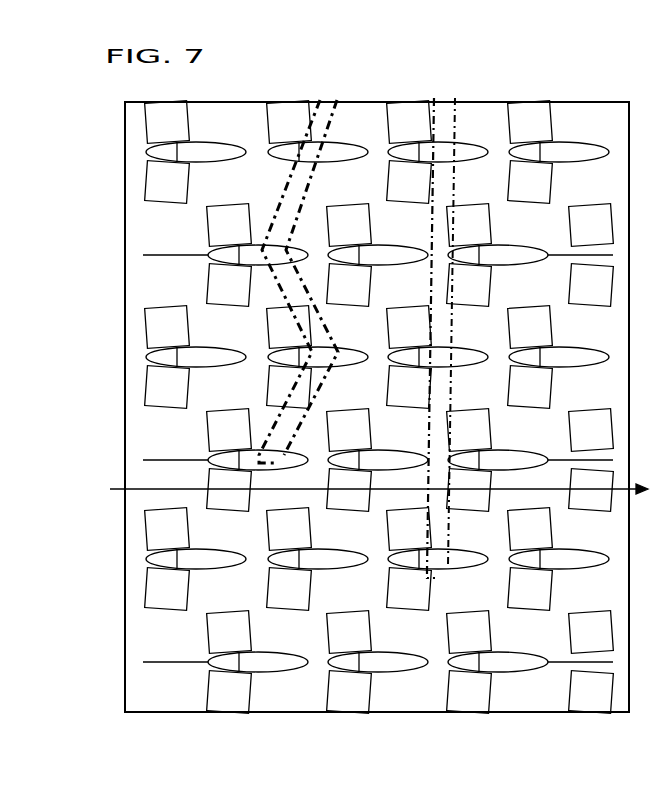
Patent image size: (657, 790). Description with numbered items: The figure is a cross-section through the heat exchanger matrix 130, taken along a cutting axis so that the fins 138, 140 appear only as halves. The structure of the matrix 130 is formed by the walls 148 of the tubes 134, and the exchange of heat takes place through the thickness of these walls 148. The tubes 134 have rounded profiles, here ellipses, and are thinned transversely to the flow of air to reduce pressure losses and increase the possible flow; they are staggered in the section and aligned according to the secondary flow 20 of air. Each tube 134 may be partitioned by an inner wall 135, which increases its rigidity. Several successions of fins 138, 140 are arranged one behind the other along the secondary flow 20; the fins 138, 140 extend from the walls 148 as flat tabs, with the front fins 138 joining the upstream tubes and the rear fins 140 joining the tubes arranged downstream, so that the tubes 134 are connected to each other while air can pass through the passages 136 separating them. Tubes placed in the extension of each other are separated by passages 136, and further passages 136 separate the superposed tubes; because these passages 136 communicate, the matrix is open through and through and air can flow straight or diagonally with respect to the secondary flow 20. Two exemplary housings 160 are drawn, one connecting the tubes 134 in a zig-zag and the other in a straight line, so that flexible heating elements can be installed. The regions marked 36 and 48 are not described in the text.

The matrix 130 is at (104, 162).
The housings 160 is at (435, 100).
The secondary flow 20 is at (363, 490).
The flow region 36 is at (338, 133).
The flow region 48 is at (320, 160).
The tubes 134 is at (186, 162).
The inner wall 135 is at (480, 255).
The passages 136 is at (161, 241).
The fins 138 is at (154, 132).
The fins 140 is at (215, 235).
The walls 148 is at (340, 348).